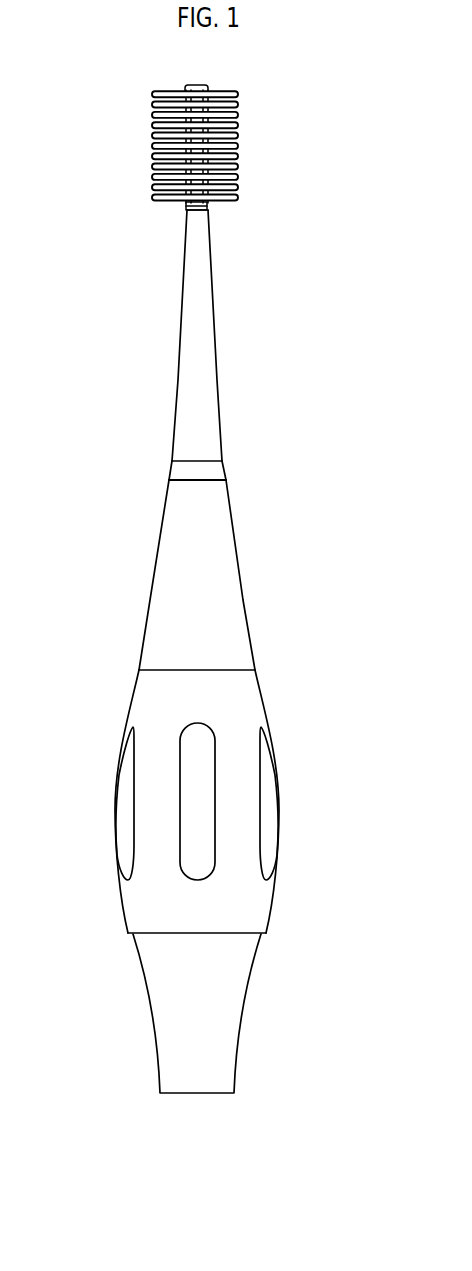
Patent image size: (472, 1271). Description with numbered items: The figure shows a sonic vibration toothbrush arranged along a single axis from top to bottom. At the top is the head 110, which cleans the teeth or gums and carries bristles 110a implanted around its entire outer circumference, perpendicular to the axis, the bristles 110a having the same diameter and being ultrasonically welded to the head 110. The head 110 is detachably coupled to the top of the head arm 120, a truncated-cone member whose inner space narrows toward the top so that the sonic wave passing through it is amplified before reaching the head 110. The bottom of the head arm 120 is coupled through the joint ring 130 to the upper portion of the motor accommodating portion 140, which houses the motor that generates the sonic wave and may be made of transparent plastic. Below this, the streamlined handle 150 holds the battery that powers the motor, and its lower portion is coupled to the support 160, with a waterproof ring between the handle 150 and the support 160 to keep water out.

The head 110 is at (201, 146).
The bristles 110a is at (158, 178).
The head arm 120 is at (205, 335).
The joint ring 130 is at (219, 471).
The motor accommodating portion 140 is at (223, 557).
The handle 150 is at (260, 902).
The support 160 is at (231, 1012).